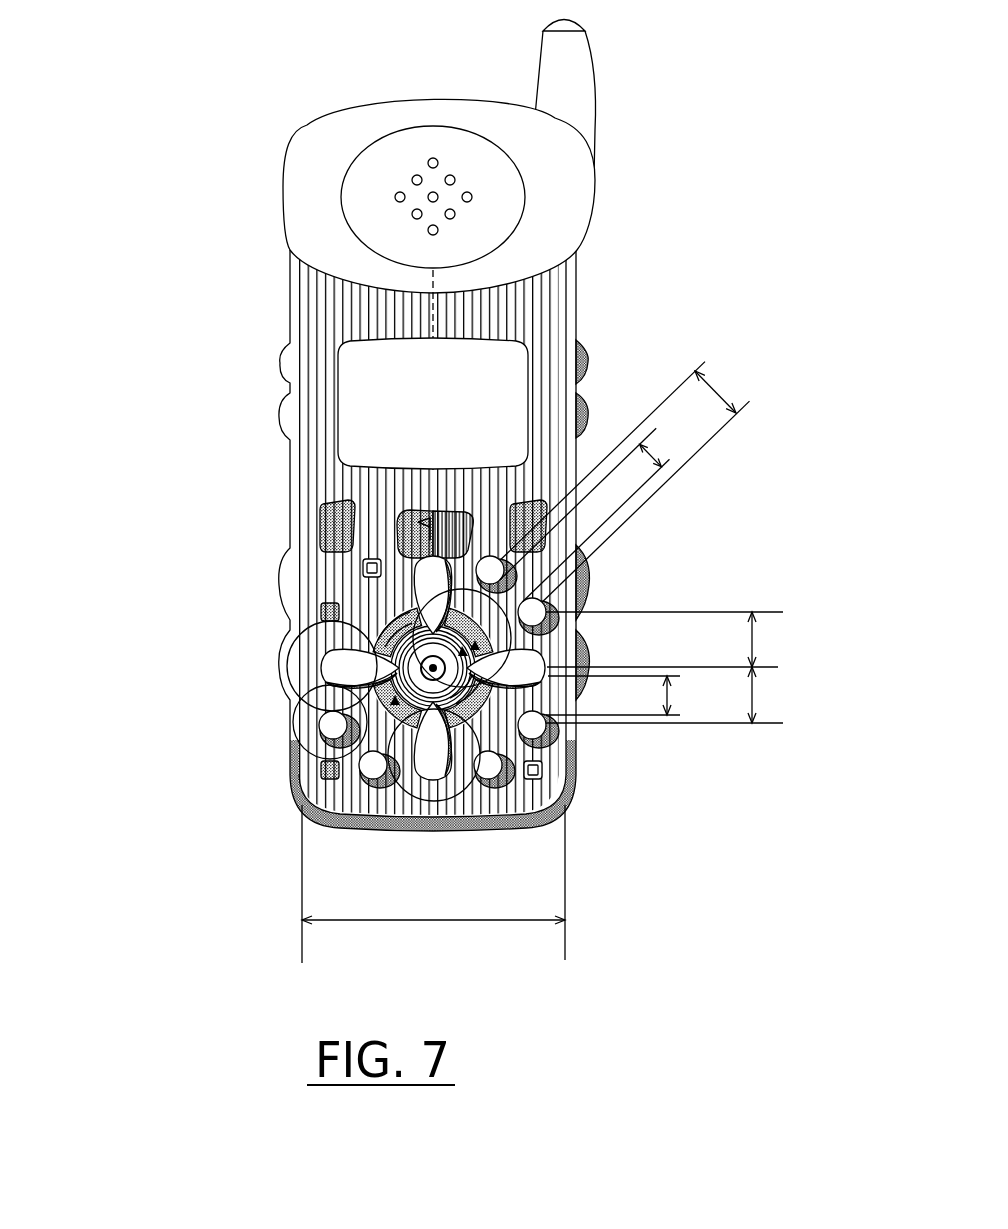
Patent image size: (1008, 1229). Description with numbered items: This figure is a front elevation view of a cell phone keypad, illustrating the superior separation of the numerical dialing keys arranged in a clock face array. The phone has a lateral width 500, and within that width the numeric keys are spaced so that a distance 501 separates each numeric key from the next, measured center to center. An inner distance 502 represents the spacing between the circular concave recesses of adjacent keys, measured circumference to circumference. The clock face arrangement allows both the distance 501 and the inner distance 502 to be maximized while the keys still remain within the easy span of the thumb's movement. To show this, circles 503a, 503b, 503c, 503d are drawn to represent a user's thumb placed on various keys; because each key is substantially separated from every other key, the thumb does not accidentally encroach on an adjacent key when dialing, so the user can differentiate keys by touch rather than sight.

The lateral width 500 is at (413, 920).
The distance 501 is at (733, 408).
The inner distance 502 is at (660, 458).
The circle 503a is at (397, 793).
The circle 503b is at (293, 720).
The circle 503c is at (288, 663).
The circle 503d is at (427, 604).